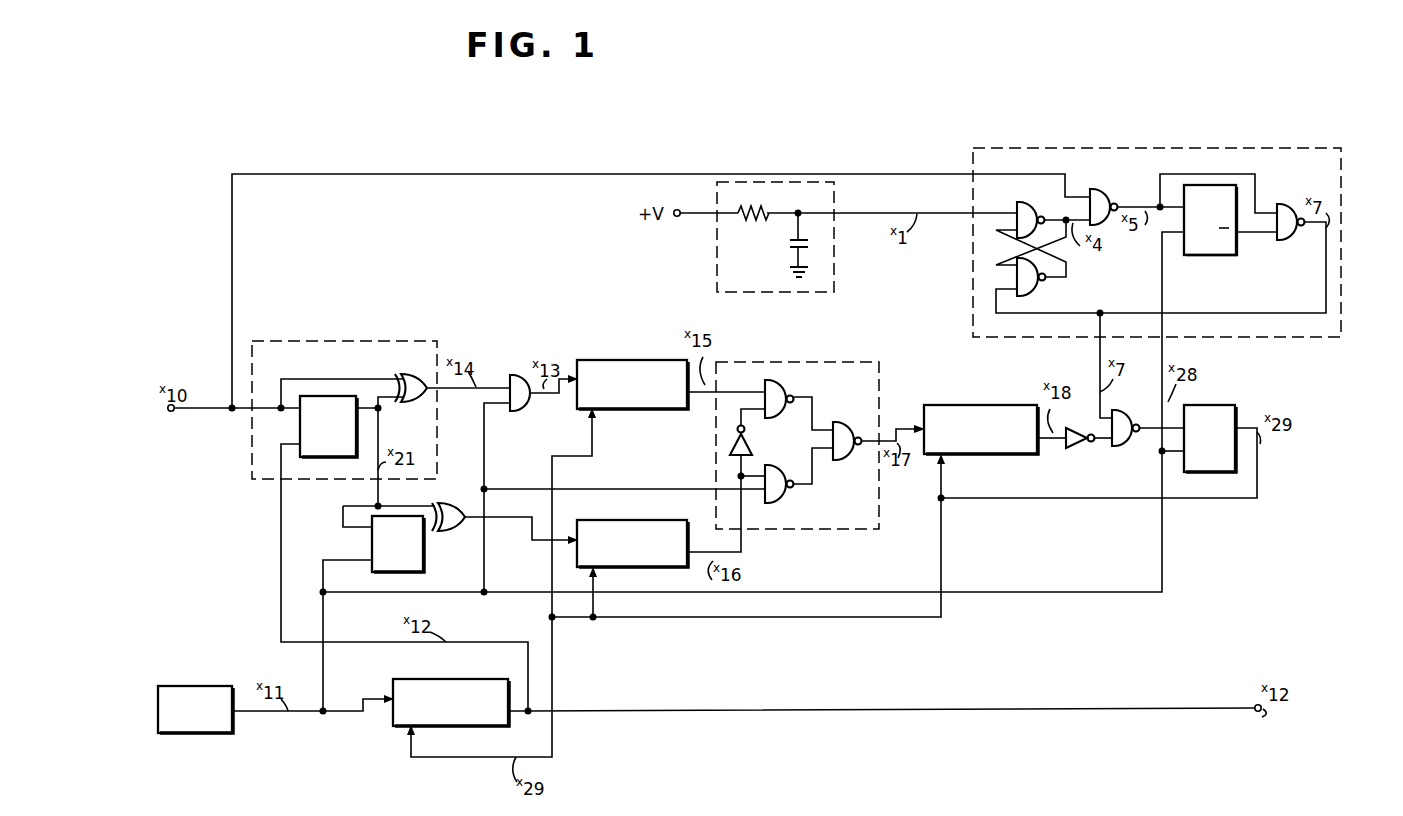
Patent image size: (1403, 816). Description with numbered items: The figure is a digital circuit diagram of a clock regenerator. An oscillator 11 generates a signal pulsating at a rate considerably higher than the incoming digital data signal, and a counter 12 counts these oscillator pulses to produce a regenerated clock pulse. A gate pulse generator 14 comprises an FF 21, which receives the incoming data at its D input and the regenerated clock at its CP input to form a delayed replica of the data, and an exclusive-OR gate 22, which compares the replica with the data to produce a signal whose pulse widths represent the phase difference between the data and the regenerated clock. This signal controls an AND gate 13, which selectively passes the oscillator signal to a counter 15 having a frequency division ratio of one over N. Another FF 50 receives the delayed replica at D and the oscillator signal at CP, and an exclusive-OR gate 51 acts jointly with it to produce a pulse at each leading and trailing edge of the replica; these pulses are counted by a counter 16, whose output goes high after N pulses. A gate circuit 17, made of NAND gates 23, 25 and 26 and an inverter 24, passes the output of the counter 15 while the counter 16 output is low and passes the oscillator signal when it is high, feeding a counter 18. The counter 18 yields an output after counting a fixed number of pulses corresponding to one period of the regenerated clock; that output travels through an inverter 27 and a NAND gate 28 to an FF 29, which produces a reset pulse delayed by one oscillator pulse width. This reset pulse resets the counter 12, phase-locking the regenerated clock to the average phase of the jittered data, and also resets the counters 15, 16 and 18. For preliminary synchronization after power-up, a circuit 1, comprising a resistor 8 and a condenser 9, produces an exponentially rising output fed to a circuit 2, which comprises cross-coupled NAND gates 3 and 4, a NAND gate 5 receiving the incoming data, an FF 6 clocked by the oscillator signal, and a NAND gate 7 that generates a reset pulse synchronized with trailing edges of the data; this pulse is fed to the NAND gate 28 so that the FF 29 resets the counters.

The circuit 1 is at (717, 251).
The circuit 2 is at (1207, 148).
The NAND gate 3 is at (1038, 291).
The NAND gate 4 is at (1044, 212).
The NAND gate 5 is at (1115, 192).
The FF 6 is at (1208, 256).
The NAND gate 7 is at (1290, 243).
The resistor 8 is at (746, 209).
The condenser 9 is at (789, 248).
The oscillator 11 is at (229, 686).
The counter 12 is at (400, 679).
The AND gate 13 is at (522, 373).
The gate pulse generator 14 is at (400, 341).
The counter 15 is at (663, 359).
The counter 16 is at (640, 521).
The gate circuit 17 is at (880, 404).
The counter 18 is at (996, 405).
The FF 21 is at (322, 458).
The exclusive-OR gate 22 is at (401, 402).
The NAND gate 23 is at (776, 389).
The inverter 24 is at (752, 450).
The NAND gate 25 is at (779, 500).
The NAND gate 26 is at (859, 408).
The inverter 27 is at (1068, 448).
The NAND gate 28 is at (1116, 447).
The FF 29 is at (1221, 405).
The FF 50 is at (423, 560).
The exclusive-OR gate 51 is at (462, 504).